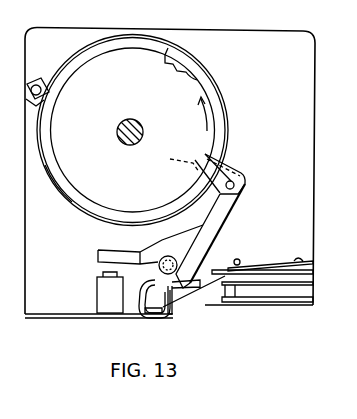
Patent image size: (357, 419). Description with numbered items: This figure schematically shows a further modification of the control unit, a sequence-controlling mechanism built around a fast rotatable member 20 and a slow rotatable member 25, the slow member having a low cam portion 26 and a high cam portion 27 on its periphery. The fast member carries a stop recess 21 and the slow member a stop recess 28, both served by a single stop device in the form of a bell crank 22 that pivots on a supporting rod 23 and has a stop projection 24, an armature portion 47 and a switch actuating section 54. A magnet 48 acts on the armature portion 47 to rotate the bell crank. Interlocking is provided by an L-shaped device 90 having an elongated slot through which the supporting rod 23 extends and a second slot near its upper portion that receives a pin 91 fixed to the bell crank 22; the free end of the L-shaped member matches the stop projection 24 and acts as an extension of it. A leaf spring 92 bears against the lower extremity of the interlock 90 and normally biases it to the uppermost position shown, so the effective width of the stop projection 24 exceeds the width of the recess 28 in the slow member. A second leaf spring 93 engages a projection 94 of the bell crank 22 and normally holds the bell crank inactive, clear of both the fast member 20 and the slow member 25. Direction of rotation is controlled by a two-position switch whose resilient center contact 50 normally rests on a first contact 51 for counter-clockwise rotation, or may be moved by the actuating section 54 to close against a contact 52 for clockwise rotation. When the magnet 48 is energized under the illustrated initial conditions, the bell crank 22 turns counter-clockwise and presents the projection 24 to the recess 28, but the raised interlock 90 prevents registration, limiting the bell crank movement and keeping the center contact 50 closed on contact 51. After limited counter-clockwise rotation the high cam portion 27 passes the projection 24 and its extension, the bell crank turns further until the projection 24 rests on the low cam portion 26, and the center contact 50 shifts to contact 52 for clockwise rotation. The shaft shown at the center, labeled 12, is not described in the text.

The hub shaft 12 is at (143, 129).
The fast rotatable member 20 is at (168, 50).
The stop recess 21 is at (186, 59).
The bell crank 22 is at (222, 232).
The supporting rod 23 is at (102, 273).
The stop projection 24 is at (212, 180).
The slow rotatable member 25 is at (132, 49).
The low cam portion 26 is at (72, 205).
The high cam portion 27 is at (134, 36).
The stop recess 28 is at (205, 162).
The armature portion 47 is at (104, 250).
The magnet 48 is at (110, 293).
The center contact 50 is at (233, 262).
The first contact 51 is at (246, 288).
The contact 52 is at (232, 262).
The switch actuating section 54 is at (183, 294).
The L-shaped device 90 is at (225, 200).
The pin 91 is at (234, 186).
The leaf spring 92 is at (142, 312).
The second leaf spring 93 is at (172, 318).
The projection 94 is at (134, 301).